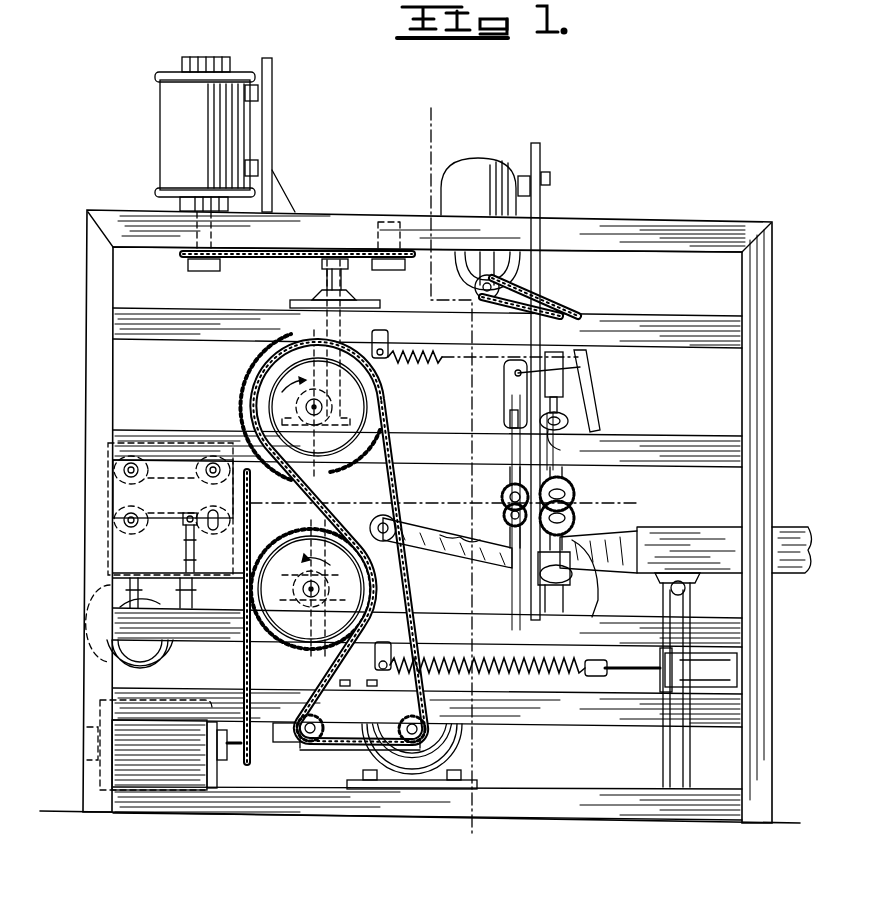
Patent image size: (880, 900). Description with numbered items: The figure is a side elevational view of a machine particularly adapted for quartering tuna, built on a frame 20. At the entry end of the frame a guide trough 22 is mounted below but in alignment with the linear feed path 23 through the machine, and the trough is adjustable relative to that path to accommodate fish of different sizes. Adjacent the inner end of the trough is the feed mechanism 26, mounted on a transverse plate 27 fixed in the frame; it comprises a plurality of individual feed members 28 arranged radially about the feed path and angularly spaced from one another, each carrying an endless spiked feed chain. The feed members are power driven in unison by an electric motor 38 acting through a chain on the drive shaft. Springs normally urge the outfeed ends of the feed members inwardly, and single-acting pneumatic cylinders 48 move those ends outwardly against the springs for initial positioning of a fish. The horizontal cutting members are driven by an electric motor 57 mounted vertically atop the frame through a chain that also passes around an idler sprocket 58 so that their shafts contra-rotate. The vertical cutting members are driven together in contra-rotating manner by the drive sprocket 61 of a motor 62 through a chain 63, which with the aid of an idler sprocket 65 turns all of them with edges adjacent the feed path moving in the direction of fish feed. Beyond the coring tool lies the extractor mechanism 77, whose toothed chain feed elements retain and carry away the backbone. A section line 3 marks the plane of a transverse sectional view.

The frame 20 is at (100, 433).
The electric motor 57 is at (170, 118).
The idler sprocket 58 is at (411, 262).
The electric motor 38 is at (482, 166).
The transverse plate 27 is at (541, 170).
The feed mechanism 26 is at (569, 190).
The section line 3- 3 is at (413, 122).
The idler sprocket 65 is at (308, 742).
The chain 63 is at (350, 748).
The drive sprocket 61 is at (408, 742).
The motor 62 is at (423, 765).
The feed member 28 is at (460, 519).
The linear feed path 23 is at (600, 508).
The guide trough 22 is at (797, 576).
The pneumatic cylinder 48 is at (700, 688).
The extractor mechanism 77 is at (165, 414).